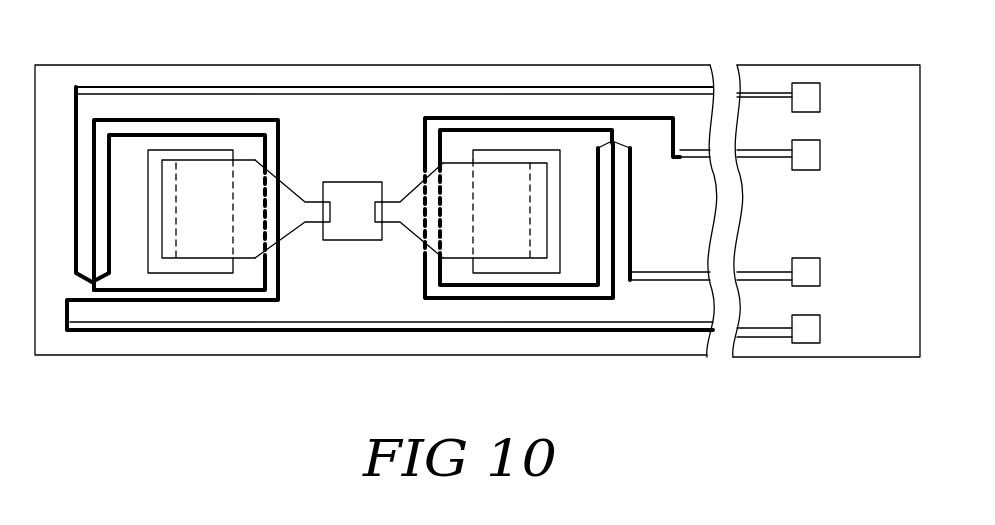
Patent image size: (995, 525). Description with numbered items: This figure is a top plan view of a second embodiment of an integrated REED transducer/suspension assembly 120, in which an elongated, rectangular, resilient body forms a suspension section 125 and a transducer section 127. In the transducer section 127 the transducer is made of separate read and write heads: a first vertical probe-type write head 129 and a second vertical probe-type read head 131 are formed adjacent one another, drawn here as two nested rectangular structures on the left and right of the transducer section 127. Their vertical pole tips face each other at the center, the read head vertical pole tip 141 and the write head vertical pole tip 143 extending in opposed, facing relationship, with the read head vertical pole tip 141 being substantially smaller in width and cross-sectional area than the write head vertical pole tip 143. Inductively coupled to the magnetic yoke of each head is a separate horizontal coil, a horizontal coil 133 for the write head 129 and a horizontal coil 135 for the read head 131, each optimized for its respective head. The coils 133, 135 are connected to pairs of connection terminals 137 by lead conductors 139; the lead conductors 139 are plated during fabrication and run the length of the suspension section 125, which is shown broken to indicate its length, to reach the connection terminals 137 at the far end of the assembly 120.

The integrated REED transducer/suspension assembly 120 is at (590, 357).
The suspension section 125 is at (690, 66).
The transducer section 127 is at (340, 66).
The first vertical probe-type write head 129 is at (573, 150).
The second vertical probe-type read head 131 is at (128, 148).
The horizontal coil 133 is at (485, 115).
The horizontal coil 135 is at (193, 118).
The connection terminals 137 is at (820, 98).
The lead conductors 139 is at (651, 93).
The read head vertical pole tip 141 is at (330, 225).
The write head vertical pole tip 143 is at (382, 225).